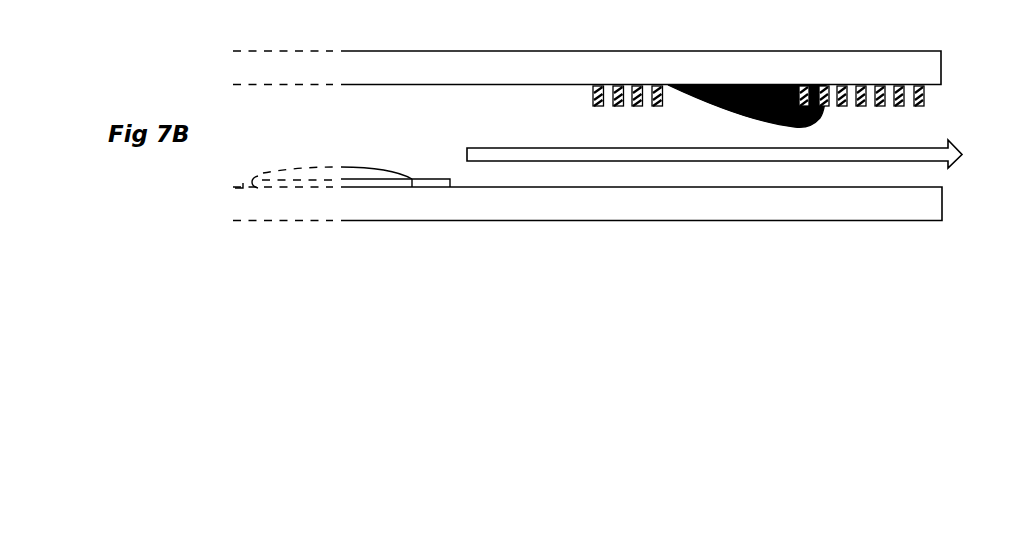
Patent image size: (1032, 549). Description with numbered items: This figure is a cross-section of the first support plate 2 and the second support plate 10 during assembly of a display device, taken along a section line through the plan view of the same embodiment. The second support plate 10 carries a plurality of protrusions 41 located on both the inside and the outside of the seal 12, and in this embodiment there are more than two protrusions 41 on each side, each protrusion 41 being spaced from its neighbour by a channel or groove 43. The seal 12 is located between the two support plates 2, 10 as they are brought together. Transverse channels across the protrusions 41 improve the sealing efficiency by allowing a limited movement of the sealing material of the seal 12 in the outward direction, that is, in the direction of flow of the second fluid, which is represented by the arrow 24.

The first support plate 2 is at (942, 203).
The second support plate 10 is at (941, 66).
The seal 12 is at (722, 85).
The arrow 24 is at (963, 155).
The protrusions 41 is at (618, 85).
The channel or groove 43 is at (647, 85).